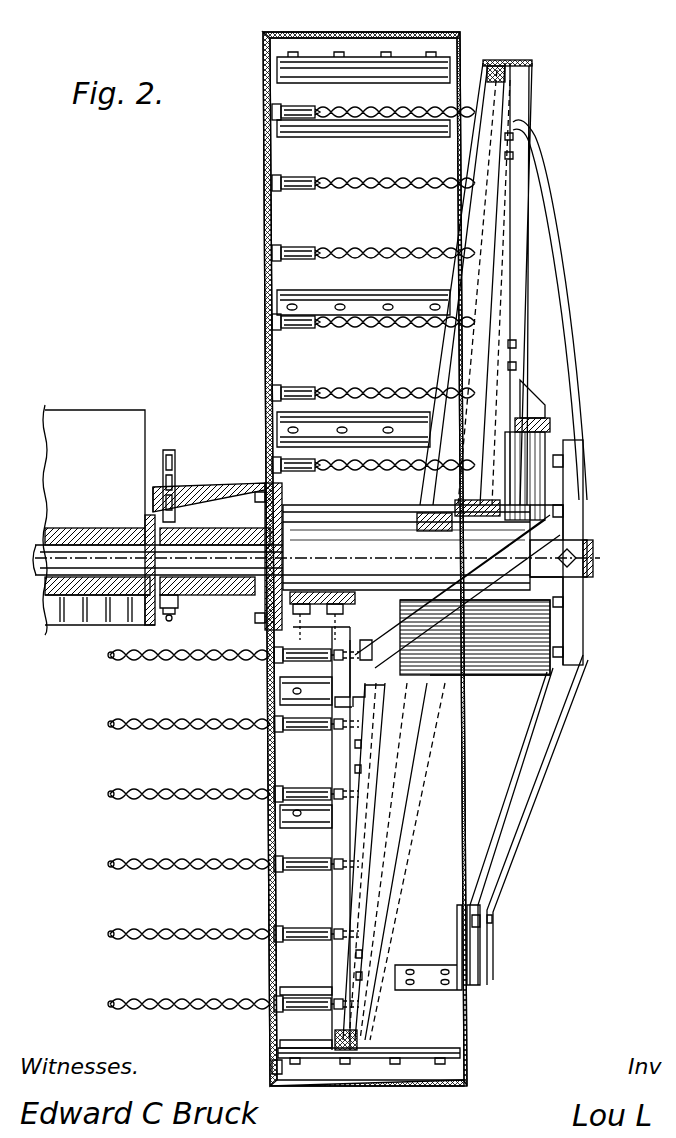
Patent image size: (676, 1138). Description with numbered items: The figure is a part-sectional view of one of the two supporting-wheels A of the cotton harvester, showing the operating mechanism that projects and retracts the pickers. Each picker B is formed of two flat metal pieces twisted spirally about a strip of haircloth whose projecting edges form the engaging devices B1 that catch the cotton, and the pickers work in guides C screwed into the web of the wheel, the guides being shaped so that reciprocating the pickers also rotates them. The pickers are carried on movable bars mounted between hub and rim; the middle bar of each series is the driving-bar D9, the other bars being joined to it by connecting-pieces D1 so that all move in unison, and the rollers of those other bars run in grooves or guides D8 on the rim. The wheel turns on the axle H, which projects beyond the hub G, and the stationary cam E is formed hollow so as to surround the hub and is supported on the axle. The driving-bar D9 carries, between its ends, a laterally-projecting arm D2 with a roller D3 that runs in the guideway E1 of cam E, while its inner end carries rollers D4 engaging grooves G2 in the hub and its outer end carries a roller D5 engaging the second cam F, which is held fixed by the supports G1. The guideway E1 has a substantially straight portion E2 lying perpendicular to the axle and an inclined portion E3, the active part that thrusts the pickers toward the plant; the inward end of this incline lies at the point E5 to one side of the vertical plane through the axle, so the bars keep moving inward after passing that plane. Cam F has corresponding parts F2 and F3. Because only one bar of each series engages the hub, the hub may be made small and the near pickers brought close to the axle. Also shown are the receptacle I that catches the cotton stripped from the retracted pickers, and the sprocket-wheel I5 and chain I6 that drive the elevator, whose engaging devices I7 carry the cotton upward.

The supporting-wheel A is at (413, 1086).
The picker B is at (408, 186).
The engaging devices B1 is at (377, 186).
The guides C is at (297, 190).
The connecting-pieces D1 is at (510, 146).
The laterally-projecting arm D2 is at (545, 410).
The roller D3 is at (548, 428).
The engaging devices or rollers D4 is at (520, 512).
The roller D5 is at (500, 66).
The grooves or guides D8 is at (295, 75).
The driving-bar D9 is at (500, 278).
The cam E is at (582, 572).
The guideway E1 is at (536, 490).
The straight portion of guideway E2 is at (545, 452).
The inclined portion of guideway E3 is at (540, 640).
The maximum inward point E5 is at (292, 730).
The cam F is at (532, 73).
The cam part F2 is at (515, 312).
The cam part F3 is at (405, 832).
The hub G is at (320, 525).
The supports G1 is at (553, 228).
The grooves G2 is at (304, 555).
The axle H is at (52, 553).
The receptacle I is at (215, 490).
The sprocket-wheel I5 is at (172, 606).
The chain I6 is at (173, 463).
The engaging devices I7 is at (108, 613).